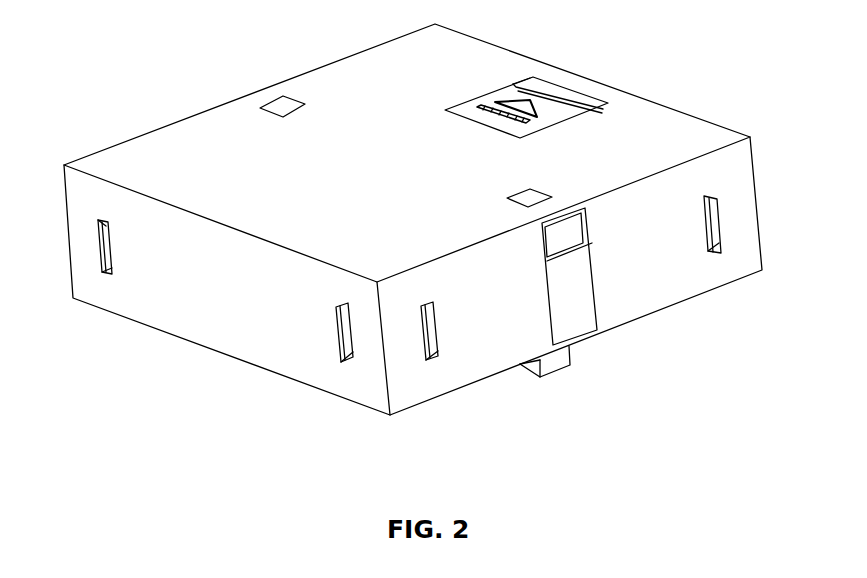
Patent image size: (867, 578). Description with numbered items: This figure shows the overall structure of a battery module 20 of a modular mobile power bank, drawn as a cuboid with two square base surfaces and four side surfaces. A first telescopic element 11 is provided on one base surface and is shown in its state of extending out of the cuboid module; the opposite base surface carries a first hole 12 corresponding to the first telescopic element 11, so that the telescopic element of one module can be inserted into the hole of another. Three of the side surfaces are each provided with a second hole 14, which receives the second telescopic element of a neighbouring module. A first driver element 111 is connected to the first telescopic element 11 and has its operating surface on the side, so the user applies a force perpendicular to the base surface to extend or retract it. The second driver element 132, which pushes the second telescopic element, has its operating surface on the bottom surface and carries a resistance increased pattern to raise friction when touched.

The battery module 20 is at (190, 110).
The first hole 12 is at (273, 99).
The second driver element 132 is at (480, 100).
The second hole 14 is at (100, 233).
The first driver element 111 is at (583, 322).
The first telescopic element 11 is at (536, 378).